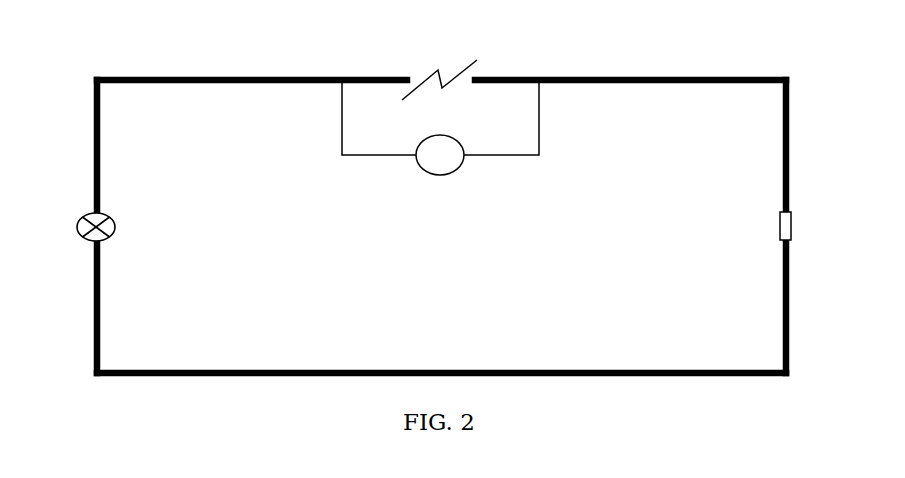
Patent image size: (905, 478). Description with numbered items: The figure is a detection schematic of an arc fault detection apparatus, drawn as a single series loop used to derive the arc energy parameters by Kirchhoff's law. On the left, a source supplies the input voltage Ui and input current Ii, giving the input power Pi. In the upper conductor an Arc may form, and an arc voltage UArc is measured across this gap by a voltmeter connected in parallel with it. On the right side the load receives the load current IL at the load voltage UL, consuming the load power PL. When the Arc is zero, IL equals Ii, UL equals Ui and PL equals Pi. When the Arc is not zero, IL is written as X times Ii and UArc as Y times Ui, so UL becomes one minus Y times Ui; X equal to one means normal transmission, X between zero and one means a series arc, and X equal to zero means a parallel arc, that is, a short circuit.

The input voltage Ui is at (63, 222).
The input power Pi is at (140, 226).
The input current Ii is at (278, 80).
The arc Arc is at (439, 67).
The arc voltage UArc is at (440, 153).
The load current IL is at (630, 80).
The load power PL is at (754, 226).
The load voltage UL is at (817, 223).